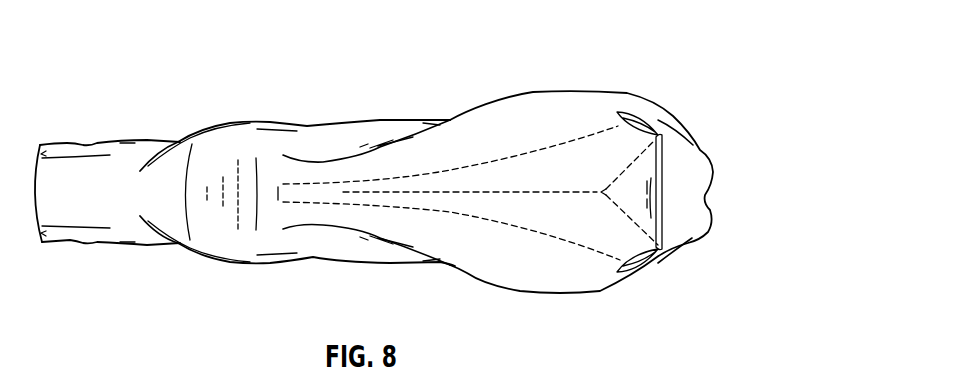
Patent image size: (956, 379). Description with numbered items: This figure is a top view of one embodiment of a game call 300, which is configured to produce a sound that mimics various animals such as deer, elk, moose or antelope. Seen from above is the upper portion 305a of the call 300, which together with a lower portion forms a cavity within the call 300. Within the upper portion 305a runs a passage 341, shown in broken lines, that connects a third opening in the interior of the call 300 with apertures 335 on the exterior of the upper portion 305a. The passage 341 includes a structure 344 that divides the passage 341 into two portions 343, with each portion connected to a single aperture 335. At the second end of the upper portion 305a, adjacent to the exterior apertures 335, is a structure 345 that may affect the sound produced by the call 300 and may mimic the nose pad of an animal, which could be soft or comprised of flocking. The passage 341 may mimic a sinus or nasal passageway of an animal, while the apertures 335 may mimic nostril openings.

The call 300 is at (405, 191).
The upper portion 305a is at (529, 191).
The apertures 335 is at (642, 260).
The passage 341 is at (290, 203).
The portions 343 is at (599, 228).
The structure 344 is at (589, 187).
The structure 345 is at (700, 168).